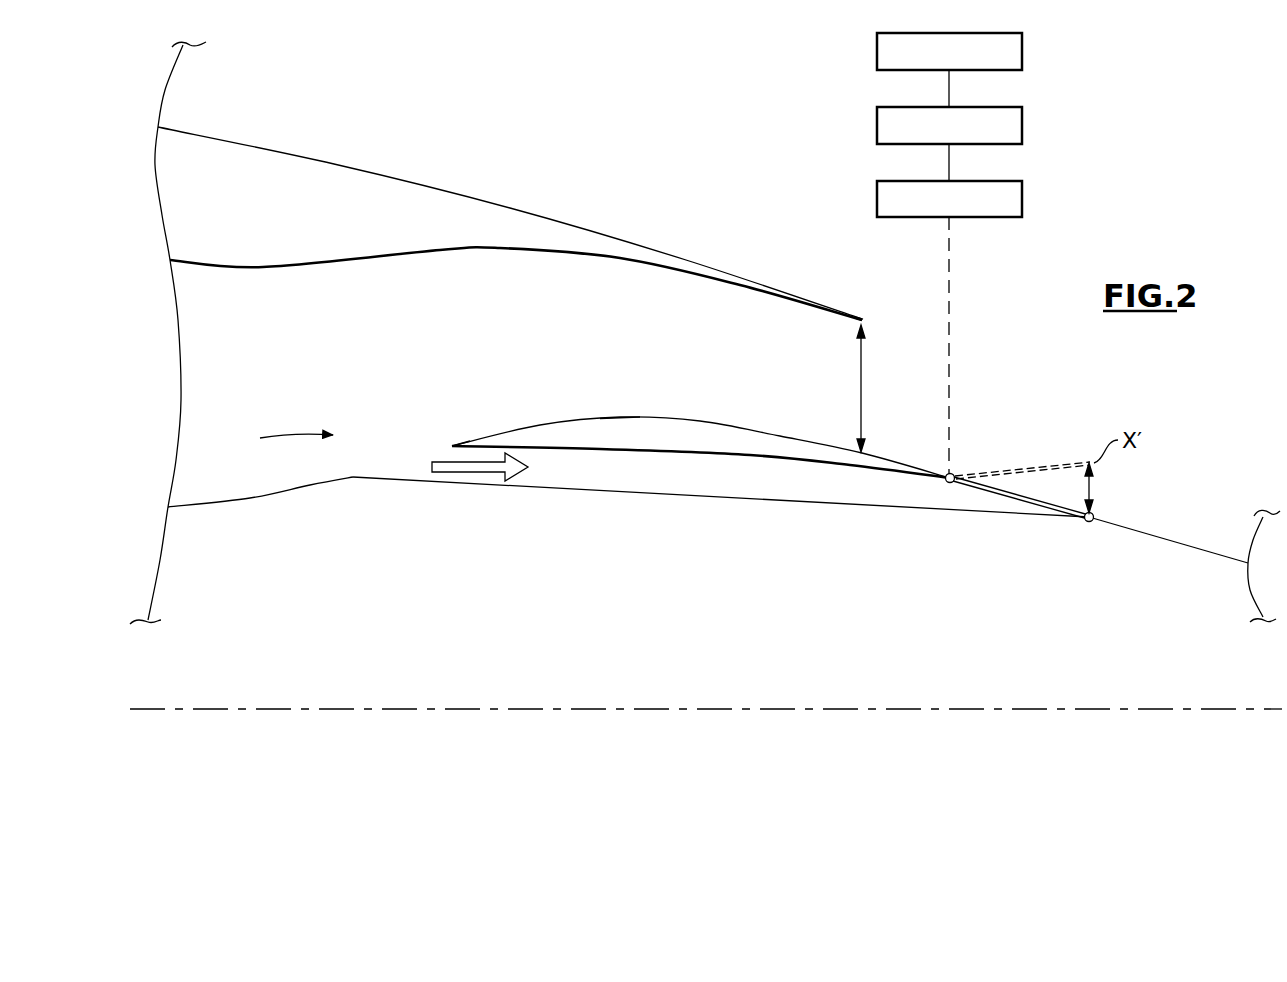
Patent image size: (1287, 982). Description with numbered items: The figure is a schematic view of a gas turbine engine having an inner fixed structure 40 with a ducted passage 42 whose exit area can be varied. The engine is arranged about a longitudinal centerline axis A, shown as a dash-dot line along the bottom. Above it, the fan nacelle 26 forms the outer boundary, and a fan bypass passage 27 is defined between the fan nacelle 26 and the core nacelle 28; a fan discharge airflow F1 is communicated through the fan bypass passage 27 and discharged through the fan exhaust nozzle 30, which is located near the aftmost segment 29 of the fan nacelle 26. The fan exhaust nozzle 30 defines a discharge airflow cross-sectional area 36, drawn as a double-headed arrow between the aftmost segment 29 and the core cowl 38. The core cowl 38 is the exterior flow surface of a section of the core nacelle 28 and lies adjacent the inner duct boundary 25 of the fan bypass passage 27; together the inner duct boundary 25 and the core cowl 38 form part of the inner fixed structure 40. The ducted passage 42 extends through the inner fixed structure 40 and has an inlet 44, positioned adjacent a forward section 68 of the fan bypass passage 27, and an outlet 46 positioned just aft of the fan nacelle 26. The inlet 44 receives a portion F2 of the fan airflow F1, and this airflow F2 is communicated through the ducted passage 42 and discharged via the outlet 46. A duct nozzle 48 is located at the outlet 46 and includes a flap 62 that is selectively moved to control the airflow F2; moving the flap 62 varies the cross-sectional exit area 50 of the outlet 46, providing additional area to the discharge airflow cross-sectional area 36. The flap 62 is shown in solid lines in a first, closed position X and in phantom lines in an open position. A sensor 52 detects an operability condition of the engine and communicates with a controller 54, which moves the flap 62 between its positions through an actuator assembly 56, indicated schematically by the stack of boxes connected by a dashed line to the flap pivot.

The inner duct boundary 25 is at (227, 513).
The fan nacelle 26 is at (358, 186).
The fan bypass passage 27 is at (515, 303).
The core nacelle 28 is at (821, 538).
The aftmost segment 29 is at (868, 306).
The fan exhaust nozzle 30 is at (854, 313).
The discharge airflow cross-sectional area 36 is at (864, 382).
The core cowl 38 is at (594, 411).
The inner fixed structure 40 is at (643, 434).
The ducted passage 42 is at (736, 484).
The inlet 44 is at (421, 451).
The outlet 46 is at (962, 503).
The duct nozzle 48 is at (1030, 510).
The cross-sectional exit area 50 is at (1094, 490).
The sensor 52 is at (877, 52).
The controller 54 is at (877, 125).
The actuator assembly 56 is at (877, 198).
The flap 62 is at (1057, 511).
The forward section 68 is at (232, 356).
The fan discharge airflow F1 is at (318, 437).
The portion of fan airflow F2 is at (495, 467).
The first position X is at (1100, 517).
The longitudinal centerline axis A is at (597, 712).